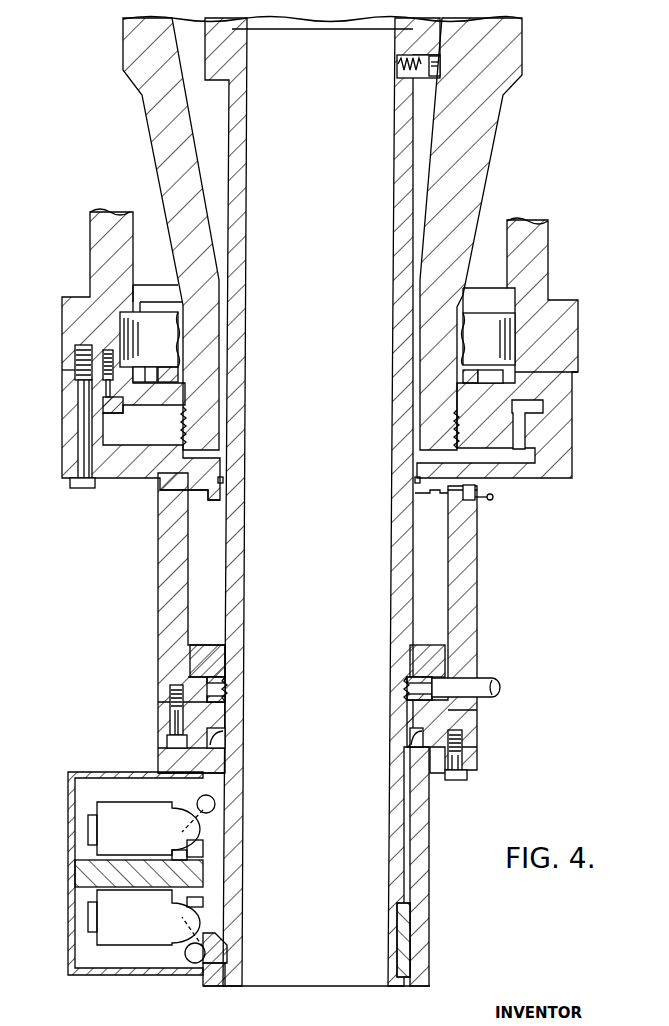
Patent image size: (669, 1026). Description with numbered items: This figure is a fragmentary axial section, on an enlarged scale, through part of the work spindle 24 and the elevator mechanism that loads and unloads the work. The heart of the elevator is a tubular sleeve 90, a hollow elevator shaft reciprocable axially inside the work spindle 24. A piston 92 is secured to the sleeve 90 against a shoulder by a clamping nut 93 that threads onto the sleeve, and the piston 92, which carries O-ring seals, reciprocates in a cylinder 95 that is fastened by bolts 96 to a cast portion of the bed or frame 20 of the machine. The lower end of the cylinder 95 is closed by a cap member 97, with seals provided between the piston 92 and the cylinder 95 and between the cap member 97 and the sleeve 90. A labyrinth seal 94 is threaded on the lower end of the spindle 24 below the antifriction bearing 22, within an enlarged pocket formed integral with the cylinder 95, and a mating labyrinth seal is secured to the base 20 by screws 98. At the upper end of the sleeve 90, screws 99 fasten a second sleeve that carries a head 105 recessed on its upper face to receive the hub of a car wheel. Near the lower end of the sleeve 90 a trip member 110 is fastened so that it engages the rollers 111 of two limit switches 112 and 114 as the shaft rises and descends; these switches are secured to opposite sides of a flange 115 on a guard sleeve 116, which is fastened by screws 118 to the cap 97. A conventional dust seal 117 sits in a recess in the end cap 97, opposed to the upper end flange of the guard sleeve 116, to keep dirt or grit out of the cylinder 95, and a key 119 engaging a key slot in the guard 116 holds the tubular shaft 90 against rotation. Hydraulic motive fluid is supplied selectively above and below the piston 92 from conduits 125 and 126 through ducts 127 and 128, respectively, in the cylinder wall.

The bed or frame 20 is at (540, 235).
The antifriction bearing 22 is at (515, 316).
The work spindle 24 is at (482, 138).
The tubular sleeve 90 is at (236, 808).
The piston 92 is at (425, 650).
The clamping nut 93 is at (205, 695).
The labyrinth seal 94 is at (507, 440).
The cylinder 95 is at (470, 592).
The bolts 96 is at (82, 429).
The cap member 97 is at (470, 715).
The screws 98 is at (105, 383).
The screws 99 is at (437, 78).
The head 105 is at (397, 29).
The trip member 110 is at (218, 966).
The rollers 111 is at (199, 800).
The limit switch 112 is at (128, 938).
The limit switch 114 is at (137, 812).
The flange 115 is at (80, 880).
The guard sleeve 116 is at (425, 861).
The dust seal 117 is at (170, 756).
The screws 118 is at (460, 778).
The key 119 is at (403, 926).
The conduit 125 is at (480, 500).
The conduit 126 is at (494, 677).
The duct 127 is at (452, 495).
The duct 128 is at (452, 682).